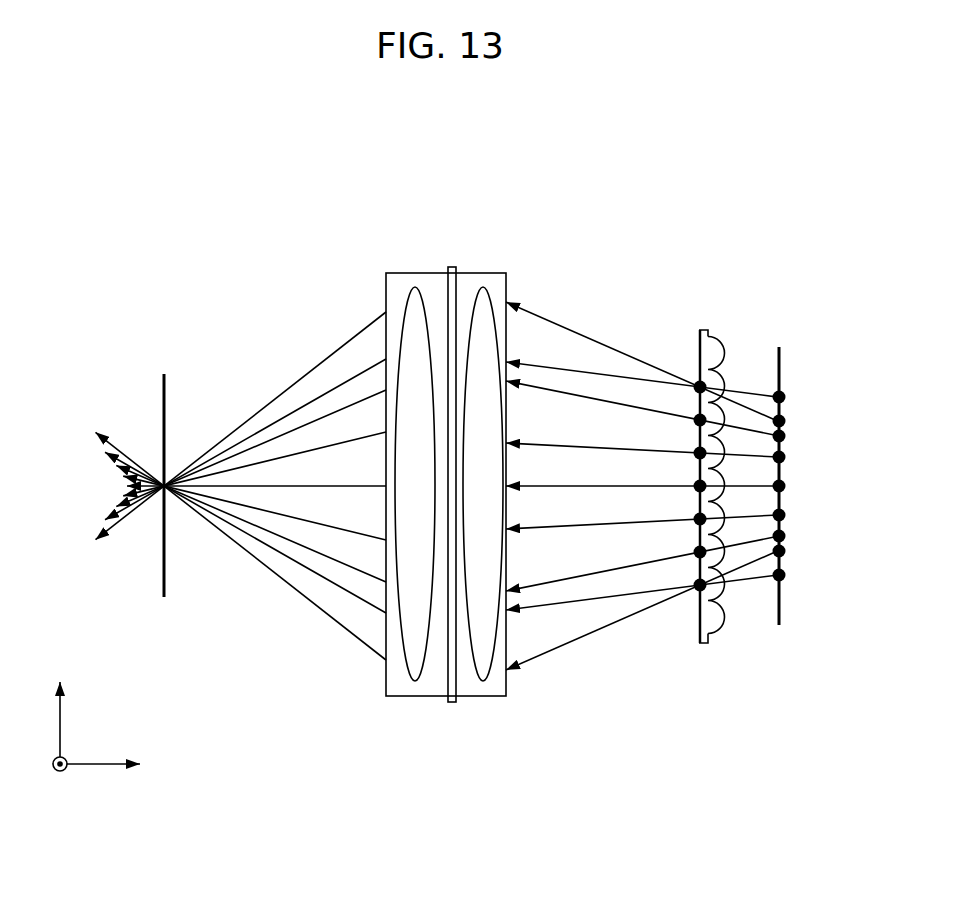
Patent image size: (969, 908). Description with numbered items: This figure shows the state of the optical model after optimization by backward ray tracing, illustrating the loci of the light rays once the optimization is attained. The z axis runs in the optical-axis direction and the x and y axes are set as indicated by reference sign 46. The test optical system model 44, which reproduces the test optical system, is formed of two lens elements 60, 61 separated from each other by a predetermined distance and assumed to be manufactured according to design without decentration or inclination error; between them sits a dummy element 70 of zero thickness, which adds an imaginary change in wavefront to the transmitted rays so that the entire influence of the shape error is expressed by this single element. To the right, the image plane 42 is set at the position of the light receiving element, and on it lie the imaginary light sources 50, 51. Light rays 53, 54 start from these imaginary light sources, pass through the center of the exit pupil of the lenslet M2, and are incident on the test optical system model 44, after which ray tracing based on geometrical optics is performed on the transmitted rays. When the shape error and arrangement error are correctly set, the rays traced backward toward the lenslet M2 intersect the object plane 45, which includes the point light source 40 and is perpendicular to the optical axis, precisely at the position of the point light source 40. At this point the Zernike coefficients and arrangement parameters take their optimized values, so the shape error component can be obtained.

The point light source 40 is at (168, 492).
The image plane 42 is at (784, 606).
The test optical system model 44 is at (398, 285).
The object plane 45 is at (168, 392).
The coordinate axes 46 is at (110, 708).
The imaginary light source 50 is at (787, 397).
The imaginary light source 51 is at (787, 421).
The light ray 53 is at (346, 380).
The light ray 54 is at (294, 384).
The lens element 60 is at (410, 665).
The lens element 61 is at (477, 665).
The dummy element 70 is at (452, 266).
The lenslet M2 is at (722, 380).